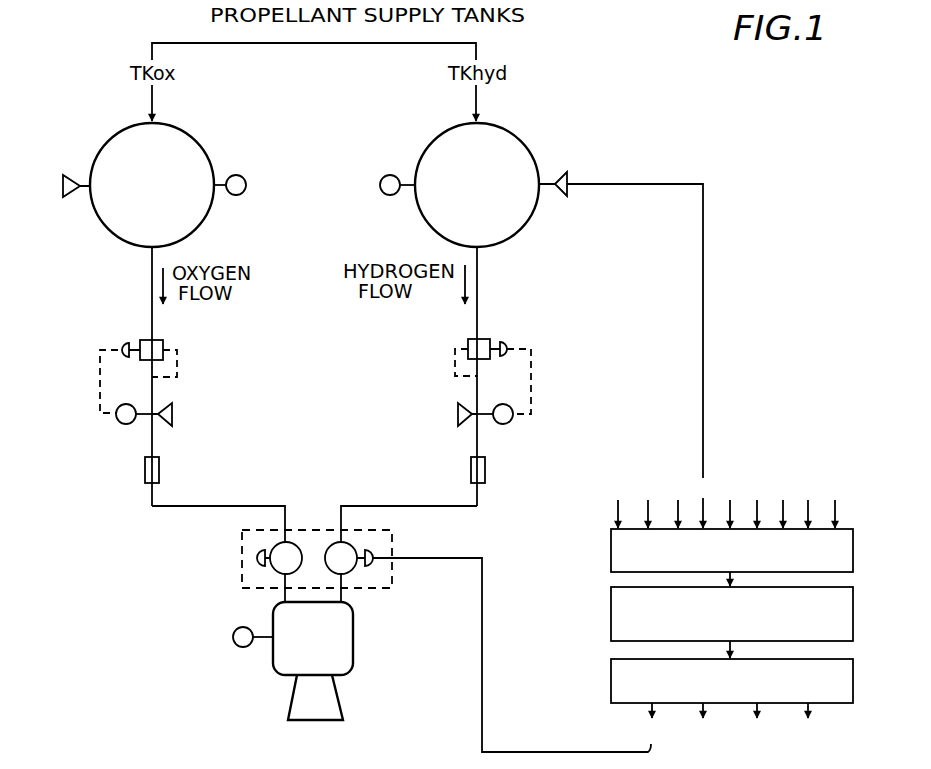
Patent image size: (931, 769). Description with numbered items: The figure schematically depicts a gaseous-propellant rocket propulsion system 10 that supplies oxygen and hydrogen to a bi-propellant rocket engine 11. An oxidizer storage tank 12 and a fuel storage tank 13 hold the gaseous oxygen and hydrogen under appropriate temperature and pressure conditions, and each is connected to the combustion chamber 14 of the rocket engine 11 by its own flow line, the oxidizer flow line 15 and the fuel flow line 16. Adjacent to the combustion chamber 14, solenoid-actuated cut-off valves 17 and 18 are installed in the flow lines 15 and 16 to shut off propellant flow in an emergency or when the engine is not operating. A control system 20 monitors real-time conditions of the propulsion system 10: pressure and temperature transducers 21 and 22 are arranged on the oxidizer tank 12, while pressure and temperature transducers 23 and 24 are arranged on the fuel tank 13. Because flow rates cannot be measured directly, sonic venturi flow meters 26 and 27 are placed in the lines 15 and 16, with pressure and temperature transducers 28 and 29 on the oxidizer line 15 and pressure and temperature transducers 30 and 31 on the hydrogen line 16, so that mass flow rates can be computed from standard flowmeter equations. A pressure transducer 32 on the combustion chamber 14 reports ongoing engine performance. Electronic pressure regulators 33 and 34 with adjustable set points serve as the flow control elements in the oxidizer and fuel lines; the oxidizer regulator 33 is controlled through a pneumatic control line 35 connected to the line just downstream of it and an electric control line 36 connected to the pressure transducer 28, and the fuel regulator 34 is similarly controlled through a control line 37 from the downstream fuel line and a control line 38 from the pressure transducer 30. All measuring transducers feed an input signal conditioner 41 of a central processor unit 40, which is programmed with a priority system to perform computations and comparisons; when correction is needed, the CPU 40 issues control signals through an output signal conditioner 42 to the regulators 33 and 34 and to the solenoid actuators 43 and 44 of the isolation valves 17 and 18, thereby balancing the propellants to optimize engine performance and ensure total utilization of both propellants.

The propellant rocket propulsion system 10 is at (557, 106).
The rocket engine 11 is at (282, 717).
The oxidizer storage tank 12 is at (112, 236).
The fuel storage tank 13 is at (530, 218).
The combustion chamber 14 is at (282, 652).
The oxidizer flow line 15 is at (158, 507).
The fuel flow line 16 is at (467, 507).
The oxidizer cut-off valve 17 is at (275, 569).
The fuel cut-off valve 18 is at (355, 570).
The control system 20 is at (506, 283).
The oxidizer tank pressure transducer 21 is at (241, 175).
The oxidizer tank temperature transducer 22 is at (67, 172).
The fuel tank pressure transducer 23 is at (388, 175).
The fuel tank temperature transducer 24 is at (567, 170).
The oxidizer sonic venturi flow meter 26 is at (146, 483).
The fuel sonic venturi flow meter 27 is at (487, 482).
The oxidizer line pressure transducer 28 is at (120, 428).
The oxidizer line temperature transducer 29 is at (172, 424).
The fuel line pressure transducer 30 is at (512, 424).
The fuel line temperature transducer 31 is at (458, 429).
The combustion chamber pressure transducer 32 is at (243, 648).
The oxidizer feed-pressure regulator 33 is at (163, 343).
The fuel feed-pressure regulator 34 is at (490, 340).
The pneumatic control line 35 is at (178, 372).
The electric control line 36 is at (97, 372).
The fuel regulator control line 37 is at (454, 364).
The fuel regulator control line 38 is at (533, 372).
The central processor unit 40 is at (611, 618).
The input signal conditioner 41 is at (611, 556).
The output signal conditioner 42 is at (611, 681).
The oxidizer valve solenoid actuator 43 is at (257, 552).
The fuel valve solenoid actuator 44 is at (373, 550).